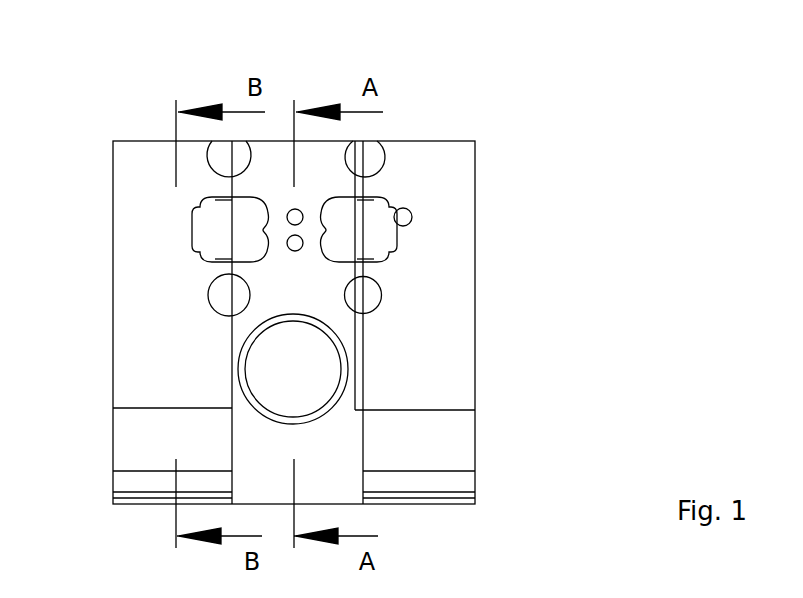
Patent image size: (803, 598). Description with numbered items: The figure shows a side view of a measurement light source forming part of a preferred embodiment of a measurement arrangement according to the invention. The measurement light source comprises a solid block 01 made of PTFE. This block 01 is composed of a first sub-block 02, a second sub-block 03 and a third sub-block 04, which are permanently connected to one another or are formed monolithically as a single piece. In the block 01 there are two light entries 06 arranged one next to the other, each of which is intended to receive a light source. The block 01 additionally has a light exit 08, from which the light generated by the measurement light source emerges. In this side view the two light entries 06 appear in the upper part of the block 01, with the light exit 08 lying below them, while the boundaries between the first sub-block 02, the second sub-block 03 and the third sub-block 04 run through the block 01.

The solid block 01 is at (462, 365).
The first sub-block 02 is at (132, 273).
The second sub-block 03 is at (267, 163).
The third sub-block 04 is at (453, 192).
The light entry 06 is at (207, 228).
The light exit 08 is at (257, 362).